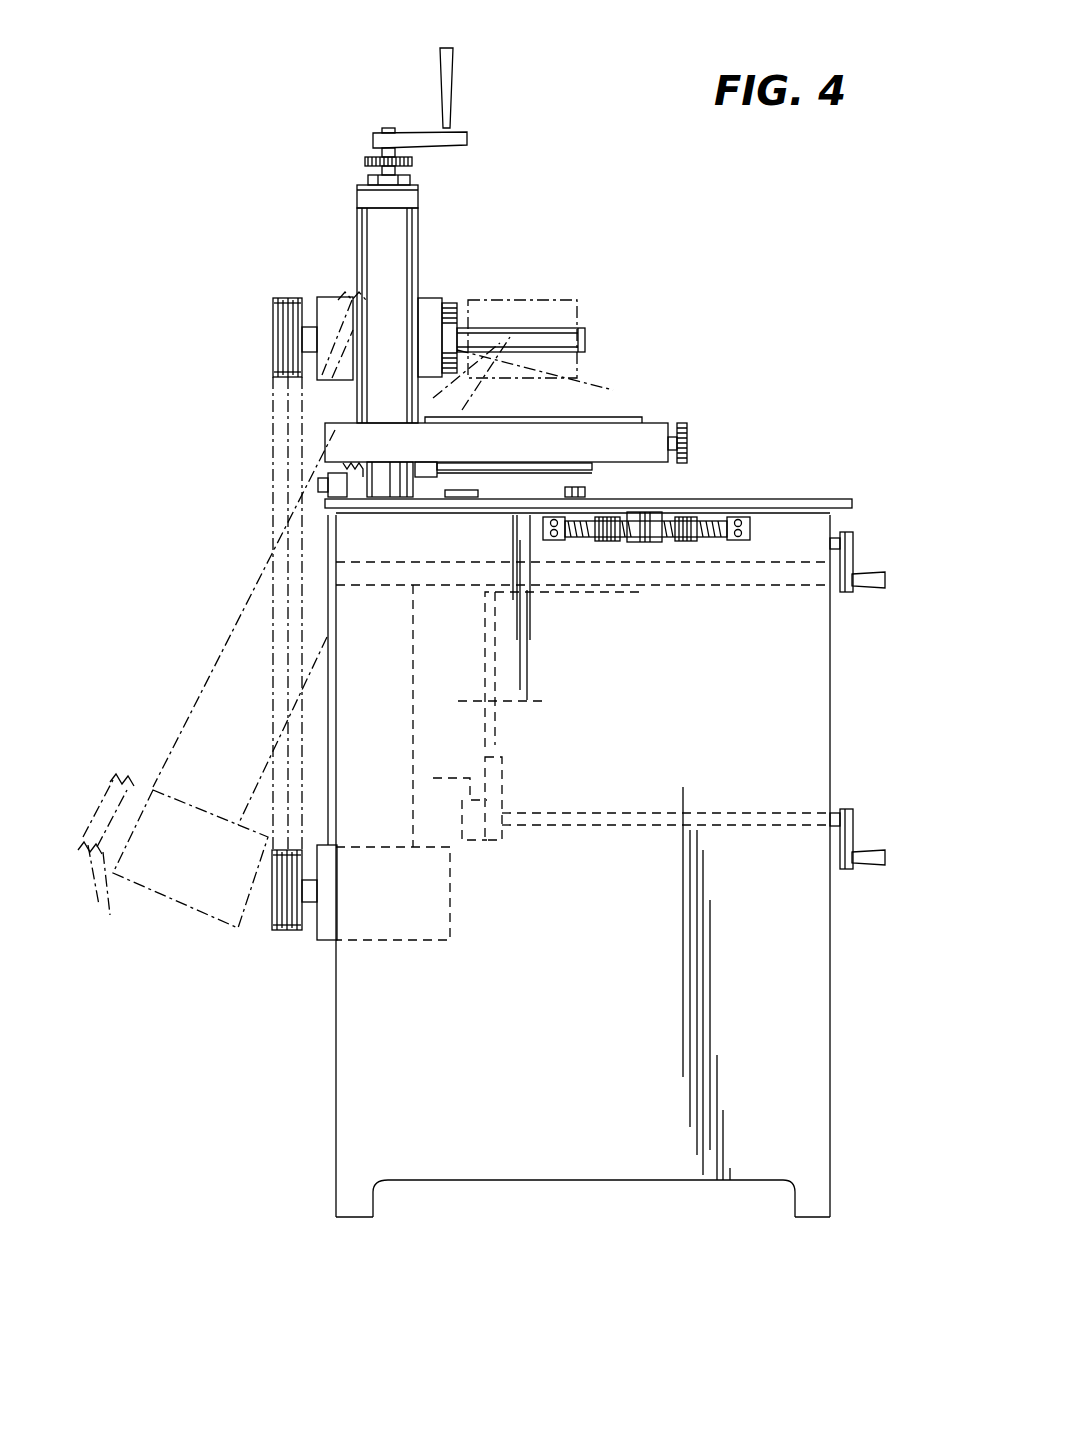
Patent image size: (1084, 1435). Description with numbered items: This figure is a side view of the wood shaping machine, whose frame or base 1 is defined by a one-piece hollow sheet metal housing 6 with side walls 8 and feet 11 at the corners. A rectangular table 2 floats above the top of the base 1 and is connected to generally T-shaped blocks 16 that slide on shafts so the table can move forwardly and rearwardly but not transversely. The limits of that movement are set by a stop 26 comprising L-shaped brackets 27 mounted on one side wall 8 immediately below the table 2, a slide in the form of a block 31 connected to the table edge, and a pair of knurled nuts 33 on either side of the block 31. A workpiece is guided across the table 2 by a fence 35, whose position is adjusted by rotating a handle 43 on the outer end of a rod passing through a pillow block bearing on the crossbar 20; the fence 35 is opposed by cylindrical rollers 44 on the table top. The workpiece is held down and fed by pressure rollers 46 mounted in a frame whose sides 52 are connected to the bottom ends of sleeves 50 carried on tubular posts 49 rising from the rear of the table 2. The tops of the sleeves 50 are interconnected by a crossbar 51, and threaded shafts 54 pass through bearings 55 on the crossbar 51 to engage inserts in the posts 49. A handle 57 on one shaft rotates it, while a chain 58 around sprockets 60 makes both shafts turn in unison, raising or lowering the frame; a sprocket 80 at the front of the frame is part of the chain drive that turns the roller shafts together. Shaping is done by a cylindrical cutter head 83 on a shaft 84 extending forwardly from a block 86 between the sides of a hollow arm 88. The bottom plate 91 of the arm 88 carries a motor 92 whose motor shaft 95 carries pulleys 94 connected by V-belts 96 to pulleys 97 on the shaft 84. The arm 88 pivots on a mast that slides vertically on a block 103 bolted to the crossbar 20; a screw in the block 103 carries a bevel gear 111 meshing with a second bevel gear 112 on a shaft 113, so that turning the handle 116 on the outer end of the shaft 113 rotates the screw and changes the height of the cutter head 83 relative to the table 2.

The base 1 is at (290, 1126).
The table 2 is at (852, 503).
The housing 6 is at (832, 1003).
The side walls 8 is at (578, 1068).
The feet 11 is at (363, 1200).
The T-shaped blocks 16 is at (713, 513).
The crossbar 20 is at (648, 585).
The stop 26 is at (628, 565).
The L-shaped brackets 27 is at (742, 528).
The block 31 is at (650, 512).
The knurled nuts 33 is at (688, 512).
The fence 35 is at (453, 495).
The handle 43 is at (850, 562).
The cylindrical rollers 44 is at (572, 488).
The pressure rollers 46 is at (503, 470).
The tubular posts 49 is at (385, 484).
The sleeves 50 is at (372, 247).
The crossbar 51 is at (360, 198).
The sides 52 is at (514, 456).
The shafts 54 is at (385, 128).
The bearings 55 is at (413, 176).
The handle 57 is at (453, 58).
The chain 58 is at (360, 147).
The sprockets 60 is at (365, 162).
The sprocket 80 is at (684, 426).
The cutter head 83 is at (577, 300).
The shaft 84 is at (552, 333).
The block 86 is at (440, 298).
The arm 88 is at (228, 638).
The bottom plate 91 is at (376, 858).
The motor 92 is at (177, 888).
The pulleys 94 is at (280, 930).
The motor shaft 95 is at (312, 905).
The V-belts 96 is at (270, 697).
The pulleys 97 is at (285, 342).
The block 103 is at (545, 701).
The bevel gear 111 is at (432, 786).
The second bevel gear 112 is at (467, 840).
The shaft 113 is at (575, 828).
The handle 116 is at (848, 840).